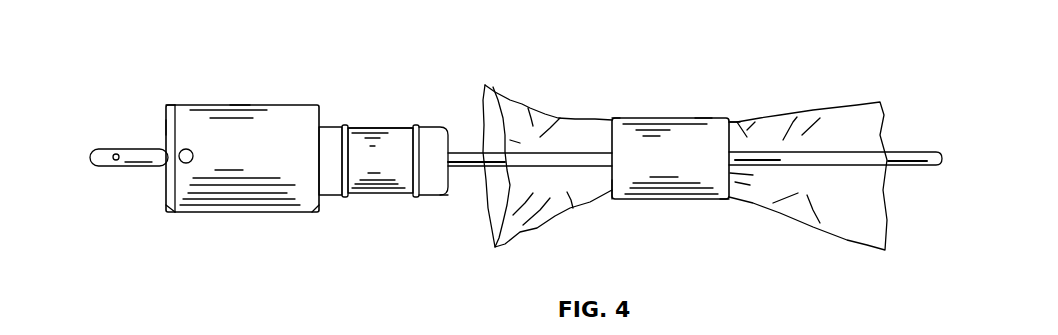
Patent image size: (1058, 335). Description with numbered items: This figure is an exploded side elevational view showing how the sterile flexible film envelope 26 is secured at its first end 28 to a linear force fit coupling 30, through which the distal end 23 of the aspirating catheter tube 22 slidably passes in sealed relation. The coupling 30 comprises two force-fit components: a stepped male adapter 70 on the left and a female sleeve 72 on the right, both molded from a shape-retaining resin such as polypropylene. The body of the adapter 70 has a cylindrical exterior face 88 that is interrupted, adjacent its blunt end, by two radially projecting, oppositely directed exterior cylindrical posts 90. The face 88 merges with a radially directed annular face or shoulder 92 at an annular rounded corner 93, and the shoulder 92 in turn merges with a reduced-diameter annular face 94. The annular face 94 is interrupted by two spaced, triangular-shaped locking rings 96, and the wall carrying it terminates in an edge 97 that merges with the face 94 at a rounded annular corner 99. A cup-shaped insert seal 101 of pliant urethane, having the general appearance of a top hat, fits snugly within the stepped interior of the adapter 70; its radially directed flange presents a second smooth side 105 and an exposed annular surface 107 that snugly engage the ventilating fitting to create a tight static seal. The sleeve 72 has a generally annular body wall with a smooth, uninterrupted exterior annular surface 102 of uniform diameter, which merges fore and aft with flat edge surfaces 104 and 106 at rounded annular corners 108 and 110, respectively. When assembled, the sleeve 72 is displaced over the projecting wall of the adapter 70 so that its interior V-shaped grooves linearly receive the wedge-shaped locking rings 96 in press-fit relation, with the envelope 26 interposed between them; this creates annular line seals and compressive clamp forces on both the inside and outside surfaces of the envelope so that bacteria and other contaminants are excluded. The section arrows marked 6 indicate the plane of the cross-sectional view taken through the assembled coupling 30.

The section line 6- 6 is at (83, 158).
The aspirating catheter tube 22 is at (547, 162).
The distal end 23 is at (140, 159).
The flexible film envelope 26 is at (860, 105).
The first end 28 is at (532, 107).
The linear force fit coupling 30 is at (326, 106).
The stepped adapter 70 is at (240, 103).
The sleeve 72 is at (703, 116).
The cylindrical exterior face 88 is at (291, 159).
The exterior cylindrical posts 90 is at (189, 152).
The annular face 92 is at (328, 197).
The annular rounded corner 93 is at (320, 212).
The reduced diameter annular face 94 is at (400, 169).
The locking rings 96 is at (412, 127).
The edge 97 is at (434, 208).
The rounded annular corner 99 is at (447, 128).
The cup-shaped insert seal 101 is at (164, 128).
The exterior annular surface 102 is at (672, 169).
The flat edge surface 104 is at (610, 187).
The second smooth side 105 is at (167, 104).
The flat edge surface 106 is at (735, 125).
The exposed annular surface 107 is at (172, 213).
The rounded annular corner 108 is at (613, 118).
The rounded annular corner 110 is at (732, 202).